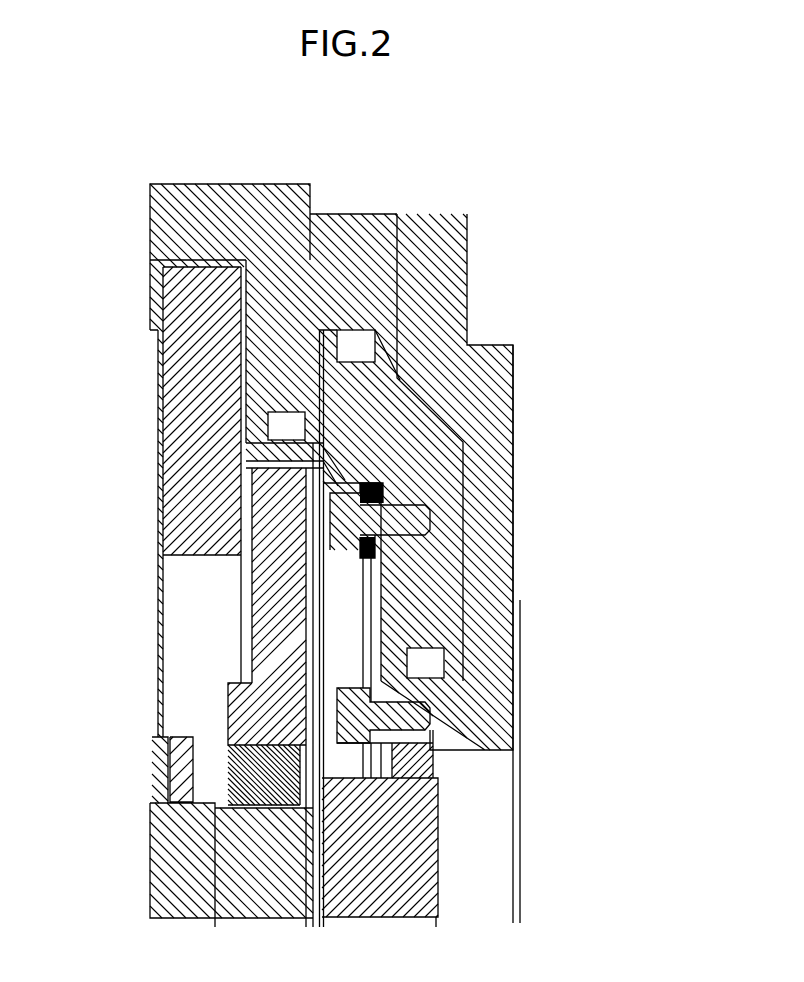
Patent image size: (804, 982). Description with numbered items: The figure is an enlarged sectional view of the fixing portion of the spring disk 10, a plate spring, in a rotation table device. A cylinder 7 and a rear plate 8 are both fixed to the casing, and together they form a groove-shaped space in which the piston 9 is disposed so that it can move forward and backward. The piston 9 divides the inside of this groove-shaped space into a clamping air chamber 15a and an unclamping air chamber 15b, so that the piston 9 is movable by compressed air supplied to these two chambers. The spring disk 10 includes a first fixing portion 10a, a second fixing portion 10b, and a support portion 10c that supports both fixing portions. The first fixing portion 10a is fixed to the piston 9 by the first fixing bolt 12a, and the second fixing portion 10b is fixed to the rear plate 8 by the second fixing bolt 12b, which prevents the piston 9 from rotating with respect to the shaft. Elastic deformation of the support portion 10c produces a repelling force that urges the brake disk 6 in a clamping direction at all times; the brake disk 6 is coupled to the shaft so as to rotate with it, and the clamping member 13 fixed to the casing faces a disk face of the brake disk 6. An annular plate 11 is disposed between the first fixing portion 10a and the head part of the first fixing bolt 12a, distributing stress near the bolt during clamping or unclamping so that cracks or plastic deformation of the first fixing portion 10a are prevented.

The cylinder 7 is at (323, 248).
The unclamping air chamber 15b is at (323, 325).
The clamping air chamber 15a is at (398, 333).
The piston 9 is at (400, 410).
The annular plate 11 is at (300, 447).
The first fixing bolt 12a is at (330, 518).
The brake disk 6 is at (250, 582).
The clamping member 13 is at (280, 662).
The second fixing bolt 12b is at (357, 718).
The spring disk 10 is at (525, 592).
The first fixing portion 10a is at (385, 548).
The support portion 10c is at (383, 608).
The second fixing portion 10b is at (420, 677).
The rear plate 8 is at (518, 740).